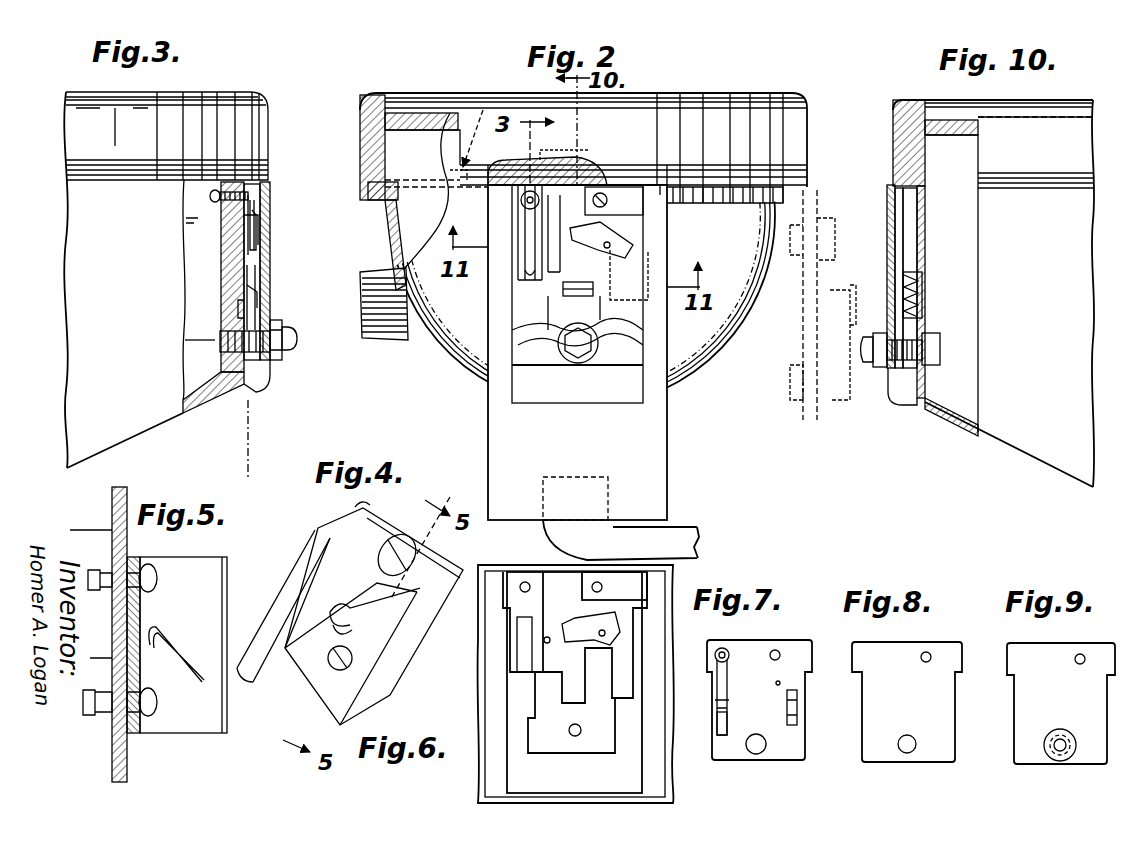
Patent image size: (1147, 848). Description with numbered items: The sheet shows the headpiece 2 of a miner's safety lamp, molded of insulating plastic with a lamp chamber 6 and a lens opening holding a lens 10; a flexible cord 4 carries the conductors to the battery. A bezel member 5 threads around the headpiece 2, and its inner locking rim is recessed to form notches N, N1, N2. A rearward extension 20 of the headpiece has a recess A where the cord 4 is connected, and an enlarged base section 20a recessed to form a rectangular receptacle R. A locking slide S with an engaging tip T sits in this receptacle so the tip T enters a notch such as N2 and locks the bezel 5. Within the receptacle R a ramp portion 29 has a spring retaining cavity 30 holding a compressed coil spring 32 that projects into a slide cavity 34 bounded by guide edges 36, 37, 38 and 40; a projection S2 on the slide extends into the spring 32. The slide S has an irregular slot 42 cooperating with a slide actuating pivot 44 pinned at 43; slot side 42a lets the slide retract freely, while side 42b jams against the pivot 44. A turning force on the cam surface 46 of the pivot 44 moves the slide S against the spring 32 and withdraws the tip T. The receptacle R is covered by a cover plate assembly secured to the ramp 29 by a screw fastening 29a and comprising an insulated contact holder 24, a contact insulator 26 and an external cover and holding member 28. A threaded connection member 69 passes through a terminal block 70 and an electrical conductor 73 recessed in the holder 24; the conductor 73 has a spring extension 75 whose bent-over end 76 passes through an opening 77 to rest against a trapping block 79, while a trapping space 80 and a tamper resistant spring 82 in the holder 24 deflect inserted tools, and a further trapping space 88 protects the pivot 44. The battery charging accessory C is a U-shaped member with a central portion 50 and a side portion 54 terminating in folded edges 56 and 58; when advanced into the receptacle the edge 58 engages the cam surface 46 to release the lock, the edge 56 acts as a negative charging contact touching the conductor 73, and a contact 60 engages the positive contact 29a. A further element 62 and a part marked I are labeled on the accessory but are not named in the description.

In FIG. 3, the headpiece 2 is at (76, 217).
In FIG. 2, the headpiece 2 is at (733, 342).
In FIG. 2, the flexible cord 4 is at (687, 527).
In FIG. 3, the bezel member 5 is at (250, 133).
In FIG. 10, the bezel member 5 is at (905, 110).
In FIG. 2, the lamp chamber 6 is at (437, 143).
In FIG. 10, the lamp chamber 6 is at (915, 158).
In FIG. 2, the lens 10 is at (427, 117).
In FIG. 2, the extension 20 is at (660, 497).
In FIG. 10, the extension 20 is at (970, 432).
In FIG. 3, the enlarged base section 20a is at (266, 386).
In FIG. 2, the enlarged base section 20a is at (670, 368).
In FIG. 10, the enlarged base section 20a is at (902, 392).
In FIG. 3, the insulated contact holder 24 is at (242, 282).
In FIG. 10, the insulated contact holder 24 is at (903, 255).
In FIG. 7, the insulated contact holder 24 is at (795, 738).
In FIG. 3, the contact insulator 26 is at (268, 250).
In FIG. 2, the contact insulator 26 is at (643, 326).
In FIG. 10, the contact insulator 26 is at (897, 225).
In FIG. 8, the contact insulator 26 is at (876, 693).
In FIG. 3, the external cover and holding member 28 is at (272, 273).
In FIG. 2, the external cover and holding member 28 is at (606, 370).
In FIG. 10, the external cover and holding member 28 is at (893, 202).
In FIG. 9, the external cover and holding member 28 is at (1028, 700).
In FIG. 10, the ramp portion 29 is at (925, 265).
In FIG. 6, the ramp portion 29 is at (550, 745).
In FIG. 3, the screw fastening 29a is at (298, 340).
In FIG. 2, the screw fastening 29a is at (581, 353).
In FIG. 10, the screw fastening 29a is at (868, 365).
In FIG. 2, the spring retaining cavity 30 is at (586, 292).
In FIG. 10, the spring retaining cavity 30 is at (920, 307).
In FIG. 6, the spring retaining cavity 30 is at (566, 690).
In FIG. 2, the coil spring 32 is at (525, 300).
In FIG. 10, the coil spring 32 is at (922, 292).
In FIG. 6, the slide cavity 34 is at (548, 618).
In FIG. 6, the guide edge 36 is at (584, 727).
In FIG. 6, the guide edge 37 is at (545, 637).
In FIG. 2, the guide edge 38 is at (614, 201).
In FIG. 6, the guide edge 38 is at (583, 590).
In FIG. 6, the guide edge 40 is at (553, 673).
In FIG. 2, the irregularly shaped slot 42 is at (556, 233).
In FIG. 2, the slot side 42a is at (560, 257).
In FIG. 2, the slot side 42b is at (578, 215).
In FIG. 2, the pin 43 is at (618, 242).
In FIG. 2, the slide actuating pivot 44 is at (601, 236).
In FIG. 6, the slide actuating pivot 44 is at (591, 624).
In FIG. 2, the cam surface 46 is at (651, 269).
In FIG. 4, the central portion 50 is at (425, 560).
In FIG. 5, the side portion 54 is at (190, 570).
In FIG. 4, the side portion 54 is at (400, 652).
In FIG. 4, the folded edge 56 is at (435, 562).
In FIG. 4, the folded edge 58 is at (305, 545).
In FIG. 5, the contact 60 is at (184, 660).
In FIG. 4, the contact 60 is at (350, 608).
In FIG. 5, the screw 62 is at (160, 692).
In FIG. 4, the screw 62 is at (328, 658).
In FIG. 3, the threaded connection member 69 is at (230, 208).
In FIG. 6, the terminal block 70 is at (510, 597).
In FIG. 3, the electrical conductor part 73 is at (267, 181).
In FIG. 2, the electrical conductor part 73 is at (522, 206).
In FIG. 7, the electrical conductor part 73 is at (728, 650).
In FIG. 3, the spring extension 75 is at (270, 223).
In FIG. 7, the spring extension 75 is at (729, 683).
In FIG. 3, the bent-over end 76 is at (237, 233).
In FIG. 7, the opening 77 is at (729, 705).
In FIG. 6, the trapping block 79 is at (518, 660).
In FIG. 3, the trapping space 80 is at (237, 313).
In FIG. 3, the tamper resistant spring 82 is at (240, 298).
In FIG. 7, the tamper resistant spring 82 is at (729, 727).
In FIG. 6, the trapping space 88 is at (622, 677).
In FIG. 2, the recess A is at (541, 503).
In FIG. 4, the recess A is at (480, 497).
In FIG. 5, the battery charging accessory C is at (232, 612).
In FIG. 4, the battery charging accessory C is at (280, 570).
In FIG. 5, the insulating plate I is at (128, 560).
In FIG. 4, the insulating plate I is at (385, 520).
In FIG. 2, the notch N is at (493, 94).
In FIG. 2, the notch N1 is at (505, 205).
In FIG. 2, the notch N2 is at (578, 178).
In FIG. 2, the receptacle R is at (547, 398).
In FIG. 6, the receptacle R is at (635, 772).
In FIG. 2, the locking slide S is at (617, 174).
In FIG. 10, the locking slide S is at (915, 210).
In FIG. 2, the projection part S2 is at (527, 305).
In FIG. 2, the engaging tip T is at (593, 173).
In FIG. 10, the engaging tip T is at (905, 182).